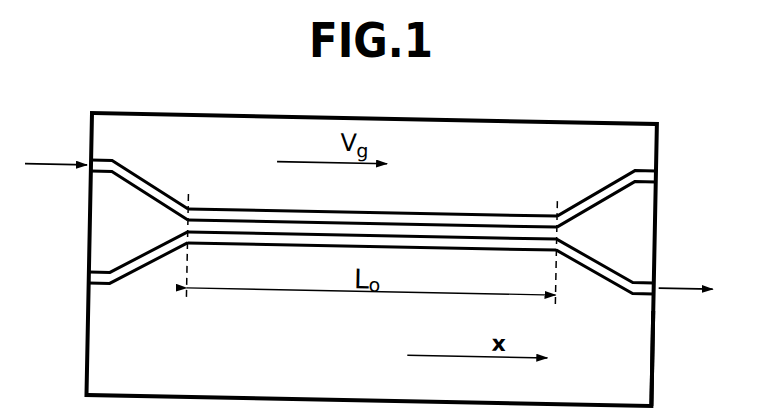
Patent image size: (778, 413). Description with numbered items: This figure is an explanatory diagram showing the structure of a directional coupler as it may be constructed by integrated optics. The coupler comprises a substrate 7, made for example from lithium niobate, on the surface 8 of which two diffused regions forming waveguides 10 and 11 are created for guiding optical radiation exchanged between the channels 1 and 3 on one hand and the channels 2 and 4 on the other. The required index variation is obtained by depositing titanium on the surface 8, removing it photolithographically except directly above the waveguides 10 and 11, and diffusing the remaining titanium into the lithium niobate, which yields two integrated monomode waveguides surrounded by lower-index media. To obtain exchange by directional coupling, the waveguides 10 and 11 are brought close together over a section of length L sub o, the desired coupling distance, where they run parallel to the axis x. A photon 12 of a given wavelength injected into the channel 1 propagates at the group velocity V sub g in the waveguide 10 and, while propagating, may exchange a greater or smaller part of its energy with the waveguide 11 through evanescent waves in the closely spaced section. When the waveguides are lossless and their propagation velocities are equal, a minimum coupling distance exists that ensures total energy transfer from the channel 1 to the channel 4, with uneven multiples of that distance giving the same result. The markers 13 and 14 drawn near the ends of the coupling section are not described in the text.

The channel 1 is at (92, 160).
The channel 2 is at (92, 273).
The channel 3 is at (658, 160).
The channel 4 is at (658, 284).
The substrate 7 is at (657, 369).
The surface 8 is at (106, 355).
The waveguide 10 is at (301, 206).
The waveguide 11 is at (302, 243).
The photon 12 is at (190, 206).
The second coupling section boundary 13 is at (559, 242).
The third coupling section boundary 14 is at (559, 206).